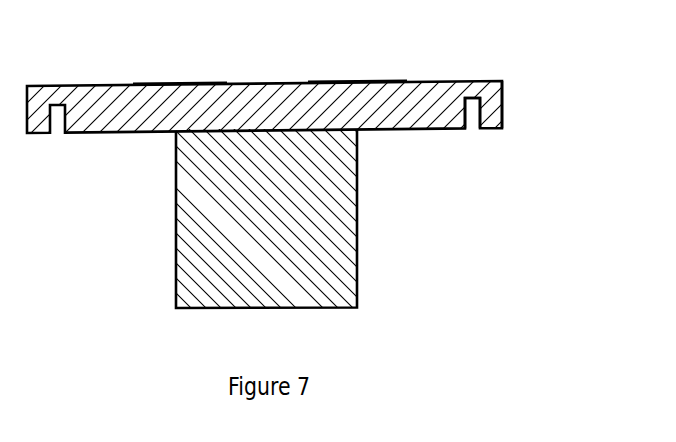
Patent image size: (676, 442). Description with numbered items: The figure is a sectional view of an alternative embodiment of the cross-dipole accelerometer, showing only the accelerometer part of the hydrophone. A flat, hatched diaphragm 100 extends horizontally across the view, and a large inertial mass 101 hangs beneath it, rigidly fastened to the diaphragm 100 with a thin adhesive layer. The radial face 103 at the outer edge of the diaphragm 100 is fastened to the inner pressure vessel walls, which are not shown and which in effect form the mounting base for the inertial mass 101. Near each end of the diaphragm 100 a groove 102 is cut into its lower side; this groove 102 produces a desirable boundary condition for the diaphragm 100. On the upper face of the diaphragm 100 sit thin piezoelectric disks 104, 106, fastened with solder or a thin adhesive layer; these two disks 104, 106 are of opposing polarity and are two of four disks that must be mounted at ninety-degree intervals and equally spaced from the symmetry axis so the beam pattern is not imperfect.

The diaphragm 100 is at (458, 83).
The inertial mass 101 is at (357, 243).
The groove 102 is at (472, 100).
The radial face 103 is at (503, 103).
The piezoelectric disk 104 is at (172, 83).
The piezoelectric disk 106 is at (365, 81).